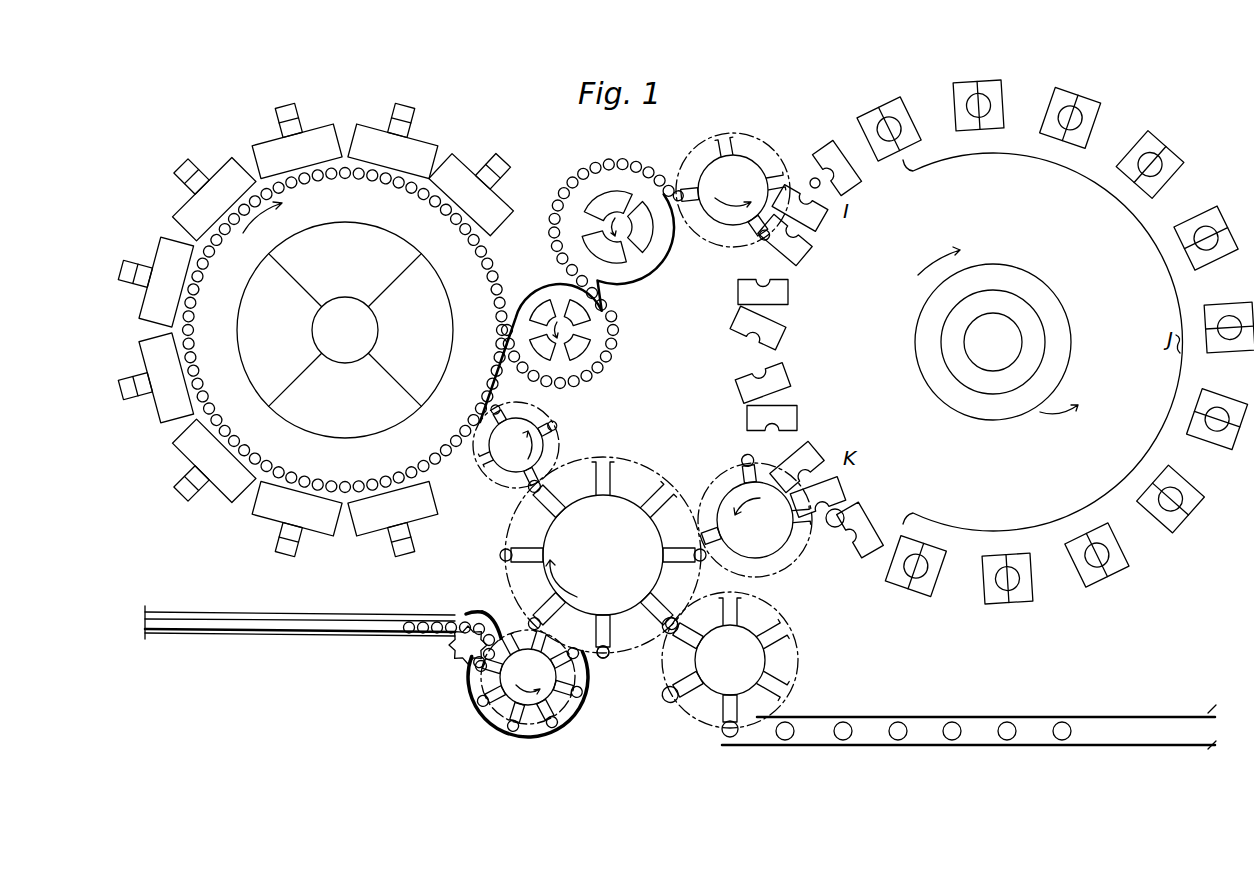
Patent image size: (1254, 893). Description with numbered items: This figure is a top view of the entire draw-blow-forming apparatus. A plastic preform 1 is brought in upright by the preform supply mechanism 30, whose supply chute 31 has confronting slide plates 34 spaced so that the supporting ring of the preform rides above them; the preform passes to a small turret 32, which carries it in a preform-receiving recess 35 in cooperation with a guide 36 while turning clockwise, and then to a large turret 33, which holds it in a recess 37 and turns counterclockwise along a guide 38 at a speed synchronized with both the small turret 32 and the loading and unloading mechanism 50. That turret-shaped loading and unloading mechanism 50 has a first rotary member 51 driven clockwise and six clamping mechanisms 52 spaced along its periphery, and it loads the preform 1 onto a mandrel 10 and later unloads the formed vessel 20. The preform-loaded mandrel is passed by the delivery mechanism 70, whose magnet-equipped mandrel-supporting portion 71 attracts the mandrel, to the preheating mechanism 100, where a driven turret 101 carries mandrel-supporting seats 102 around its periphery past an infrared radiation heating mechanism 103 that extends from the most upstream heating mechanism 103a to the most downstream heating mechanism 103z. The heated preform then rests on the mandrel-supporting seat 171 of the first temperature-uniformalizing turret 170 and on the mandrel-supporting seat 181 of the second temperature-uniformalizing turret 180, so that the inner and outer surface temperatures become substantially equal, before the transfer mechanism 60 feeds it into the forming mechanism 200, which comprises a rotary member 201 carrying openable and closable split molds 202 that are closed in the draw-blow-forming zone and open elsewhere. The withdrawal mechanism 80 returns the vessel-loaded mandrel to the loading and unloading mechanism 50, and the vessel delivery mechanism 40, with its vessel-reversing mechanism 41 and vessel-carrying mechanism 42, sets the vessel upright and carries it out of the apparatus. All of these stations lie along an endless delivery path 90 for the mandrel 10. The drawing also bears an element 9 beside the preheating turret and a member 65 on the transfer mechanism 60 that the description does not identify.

The preform 1 is at (496, 483).
The articles on turret 9 is at (458, 440).
The mandrel 10 is at (602, 656).
The formed vessel 20 is at (846, 745).
The preform supply mechanism 30 is at (479, 728).
The supply chute 31 is at (371, 638).
The small turret 32 is at (452, 653).
The large turret 33 is at (548, 727).
The confronting slide plates 34 is at (342, 617).
The preform-receiving recess 35 is at (460, 668).
The guide 36 is at (466, 614).
The preform-receiving recess 37 is at (492, 622).
The guide 38 is at (590, 700).
The vessel delivery mechanism 40 is at (810, 650).
The vessel-reversing mechanism 41 is at (785, 680).
The vessel-carrying mechanism 42 is at (982, 717).
The loading and unloading mechanism 50 is at (685, 452).
The first rotary member 51 is at (607, 567).
The clamping mechanism 52 is at (660, 480).
The transfer mechanism 60 is at (766, 133).
The transfer wheel pin 65 is at (678, 190).
The preform delivery mechanism 70 is at (495, 468).
The mandrel-supporting portion 71 is at (560, 444).
The withdrawal mechanism 80 is at (805, 571).
The endless delivery path 90 is at (722, 250).
The preheating mechanism 100 is at (175, 438).
The turret 101 is at (475, 391).
The mandrel-supporting seats 102 is at (500, 370).
The infrared radiation heating mechanism 103 is at (220, 496).
The most upstream infrared radiation heating mechanism 103a is at (373, 538).
The most downstream infrared radiation heating mechanism 103z is at (448, 168).
The first temperature-uniformalizing turret 170 is at (598, 371).
The mandrel-supporting seat 171 is at (530, 297).
The second temperature-uniformalizing turret 180 is at (627, 295).
The mandrel-supporting seat 181 is at (648, 280).
The forming mechanism 200 is at (1195, 182).
The rotary member 201 is at (1050, 290).
The split mold 202 is at (1097, 93).